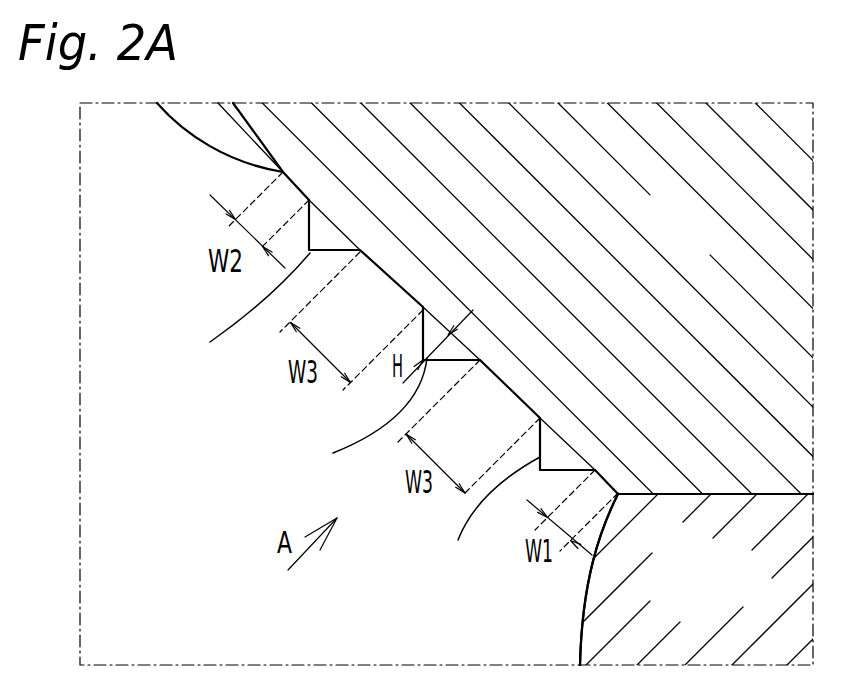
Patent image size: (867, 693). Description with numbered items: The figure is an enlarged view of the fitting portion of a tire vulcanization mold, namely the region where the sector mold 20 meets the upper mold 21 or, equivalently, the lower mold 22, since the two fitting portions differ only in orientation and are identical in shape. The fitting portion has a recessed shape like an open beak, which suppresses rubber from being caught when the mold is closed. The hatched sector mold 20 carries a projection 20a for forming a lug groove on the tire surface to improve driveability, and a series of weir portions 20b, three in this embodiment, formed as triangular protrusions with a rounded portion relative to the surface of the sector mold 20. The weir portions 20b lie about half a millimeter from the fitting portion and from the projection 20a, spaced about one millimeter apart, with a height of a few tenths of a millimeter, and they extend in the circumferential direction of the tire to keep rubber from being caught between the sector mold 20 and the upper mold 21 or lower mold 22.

The sector mold 20 is at (700, 228).
The projection 20a is at (190, 125).
The weir portion 20b is at (349, 417).
The upper mold 21 is at (686, 592).
The lower mold 22 is at (765, 595).